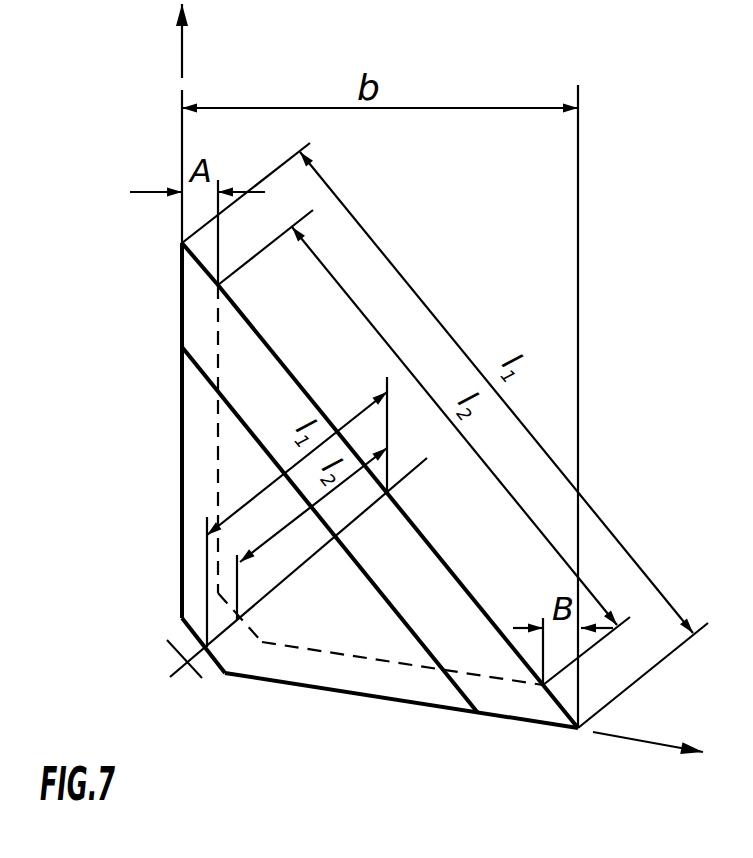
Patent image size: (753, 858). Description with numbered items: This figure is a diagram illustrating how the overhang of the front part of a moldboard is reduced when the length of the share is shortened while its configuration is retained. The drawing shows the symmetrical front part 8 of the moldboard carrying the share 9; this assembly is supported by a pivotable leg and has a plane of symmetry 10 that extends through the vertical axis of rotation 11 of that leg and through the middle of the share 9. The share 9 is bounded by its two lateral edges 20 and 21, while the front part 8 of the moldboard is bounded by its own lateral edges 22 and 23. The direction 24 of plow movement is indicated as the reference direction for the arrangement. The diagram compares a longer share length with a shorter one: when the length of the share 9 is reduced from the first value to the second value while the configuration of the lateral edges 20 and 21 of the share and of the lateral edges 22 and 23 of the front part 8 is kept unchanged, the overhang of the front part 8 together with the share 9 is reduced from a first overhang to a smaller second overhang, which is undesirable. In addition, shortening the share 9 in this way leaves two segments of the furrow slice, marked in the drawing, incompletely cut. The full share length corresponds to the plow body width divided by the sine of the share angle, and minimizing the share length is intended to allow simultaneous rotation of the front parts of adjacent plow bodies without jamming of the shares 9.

The symmetrical part of a moldboard 8 is at (353, 640).
The share 9 is at (503, 668).
The plane of symmetry 10 is at (279, 600).
The vertical axis of rotation 11 is at (185, 662).
The lateral edge of the share 20 is at (182, 290).
The lateral edge of the share 21 is at (540, 730).
The lateral edge of the front part of the moldboard 22 is at (182, 478).
The lateral edge of the front part of the moldboard 23 is at (397, 703).
The direction of the plow movement 24 is at (182, 52).